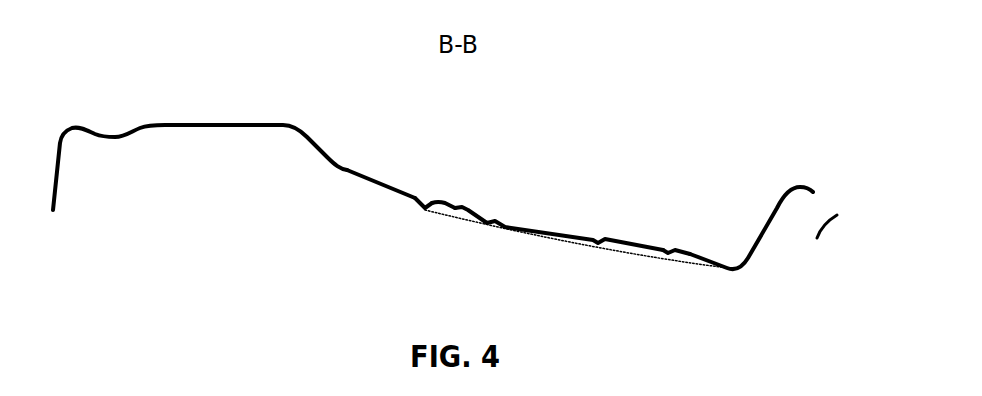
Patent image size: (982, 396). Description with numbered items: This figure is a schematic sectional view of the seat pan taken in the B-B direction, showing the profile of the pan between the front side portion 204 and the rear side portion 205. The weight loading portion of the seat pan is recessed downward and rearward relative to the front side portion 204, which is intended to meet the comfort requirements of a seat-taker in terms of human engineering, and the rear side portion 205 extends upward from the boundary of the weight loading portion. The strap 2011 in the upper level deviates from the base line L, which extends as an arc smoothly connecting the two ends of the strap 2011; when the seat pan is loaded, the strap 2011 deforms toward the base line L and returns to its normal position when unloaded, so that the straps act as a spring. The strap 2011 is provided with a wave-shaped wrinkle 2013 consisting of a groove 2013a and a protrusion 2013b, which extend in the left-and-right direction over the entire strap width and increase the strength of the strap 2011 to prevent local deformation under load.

The front side portion 204 is at (82, 125).
The rear side portion 205 is at (812, 183).
The wave-shaped wrinkle 2013 is at (480, 212).
The groove 2013a is at (427, 209).
The protrusion 2013b is at (457, 181).
The strap 2011 is at (677, 248).
The base line L is at (617, 255).